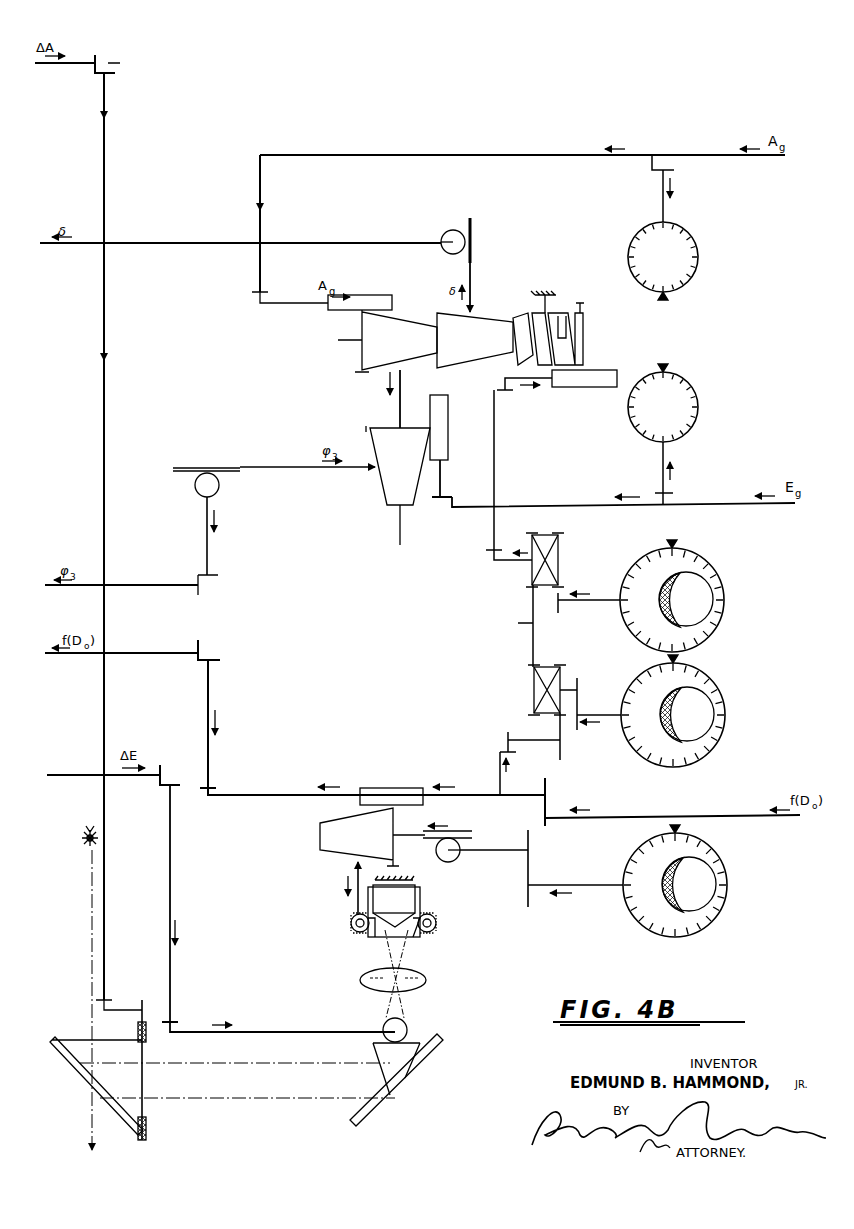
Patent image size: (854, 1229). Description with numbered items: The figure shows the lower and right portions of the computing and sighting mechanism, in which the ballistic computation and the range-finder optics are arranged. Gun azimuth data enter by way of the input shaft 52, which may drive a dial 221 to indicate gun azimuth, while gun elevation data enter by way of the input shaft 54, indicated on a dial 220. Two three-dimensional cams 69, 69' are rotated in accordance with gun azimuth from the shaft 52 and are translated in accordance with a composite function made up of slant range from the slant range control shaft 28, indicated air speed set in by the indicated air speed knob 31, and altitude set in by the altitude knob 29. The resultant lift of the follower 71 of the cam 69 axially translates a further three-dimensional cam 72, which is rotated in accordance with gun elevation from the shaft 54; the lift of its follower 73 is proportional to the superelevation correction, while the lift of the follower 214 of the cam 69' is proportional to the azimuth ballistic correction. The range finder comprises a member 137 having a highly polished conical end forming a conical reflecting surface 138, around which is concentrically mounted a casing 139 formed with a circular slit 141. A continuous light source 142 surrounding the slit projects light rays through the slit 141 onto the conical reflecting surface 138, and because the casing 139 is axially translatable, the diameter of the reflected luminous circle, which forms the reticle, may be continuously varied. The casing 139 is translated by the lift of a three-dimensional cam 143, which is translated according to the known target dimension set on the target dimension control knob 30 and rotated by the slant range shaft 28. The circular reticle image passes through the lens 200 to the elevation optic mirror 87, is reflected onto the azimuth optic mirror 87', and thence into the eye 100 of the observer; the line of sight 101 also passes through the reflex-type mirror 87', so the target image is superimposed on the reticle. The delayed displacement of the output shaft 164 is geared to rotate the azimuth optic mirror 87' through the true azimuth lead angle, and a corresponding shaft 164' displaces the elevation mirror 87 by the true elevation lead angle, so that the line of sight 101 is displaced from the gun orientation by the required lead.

The output shaft 164 is at (88, 532).
The output shaft 164' is at (113, 767).
The input shaft 52 is at (688, 155).
The input shaft 54 is at (722, 506).
The slant range control shaft 28 is at (722, 816).
The dial 221 is at (698, 250).
The dial 220 is at (698, 410).
The follower 214 is at (478, 262).
The three-dimensional cam 69 is at (382, 325).
The three-dimensional cam 69' is at (527, 413).
The follower 71 is at (400, 408).
The three-dimensional cam 72 is at (390, 492).
The follower 73 is at (300, 470).
The member 137 is at (545, 664).
The altitude knob 29 is at (698, 582).
The indicated air speed knob 31 is at (700, 696).
The target dimension control knob 30 is at (720, 904).
The three-dimensional cam 143 is at (320, 838).
The continuous light source 142 is at (351, 916).
The casing 139 is at (434, 908).
The circular slit 141 is at (376, 934).
The conical reflecting surface 138 is at (412, 932).
The lens 200 is at (420, 980).
The elevation optic mirror 87 is at (302, 955).
The azimuth optic mirror 87' is at (221, 1070).
The eye 100 is at (86, 842).
The line of sight 101 is at (92, 1138).